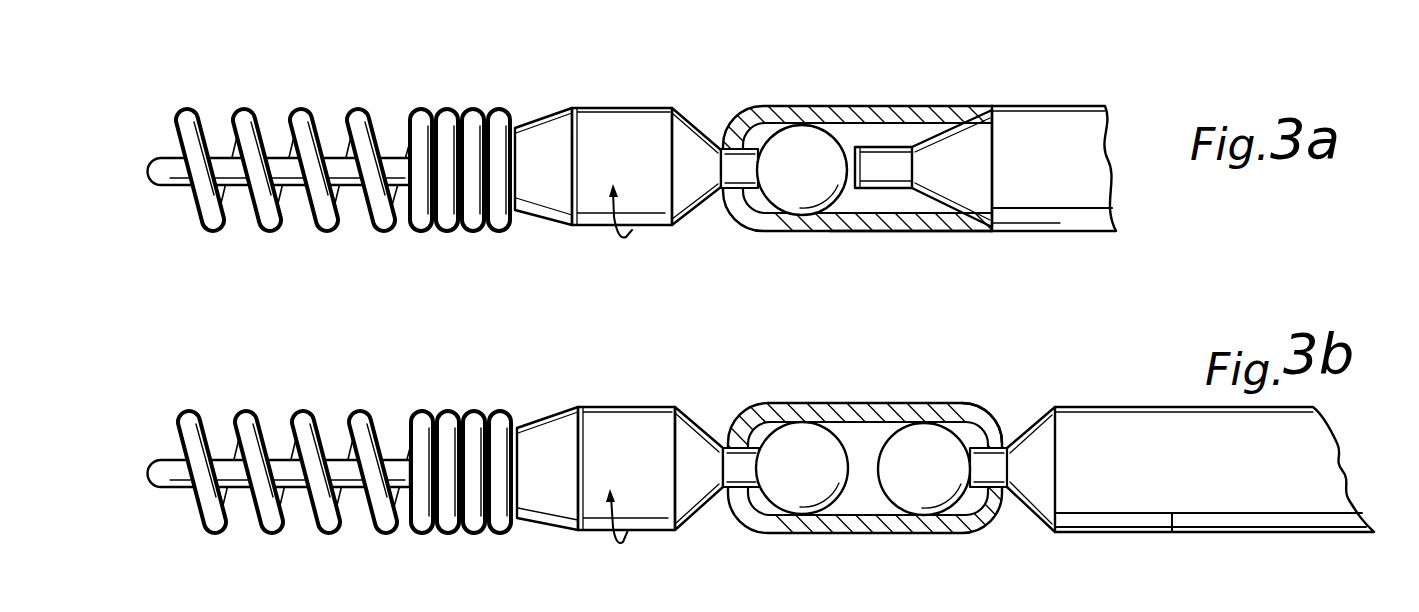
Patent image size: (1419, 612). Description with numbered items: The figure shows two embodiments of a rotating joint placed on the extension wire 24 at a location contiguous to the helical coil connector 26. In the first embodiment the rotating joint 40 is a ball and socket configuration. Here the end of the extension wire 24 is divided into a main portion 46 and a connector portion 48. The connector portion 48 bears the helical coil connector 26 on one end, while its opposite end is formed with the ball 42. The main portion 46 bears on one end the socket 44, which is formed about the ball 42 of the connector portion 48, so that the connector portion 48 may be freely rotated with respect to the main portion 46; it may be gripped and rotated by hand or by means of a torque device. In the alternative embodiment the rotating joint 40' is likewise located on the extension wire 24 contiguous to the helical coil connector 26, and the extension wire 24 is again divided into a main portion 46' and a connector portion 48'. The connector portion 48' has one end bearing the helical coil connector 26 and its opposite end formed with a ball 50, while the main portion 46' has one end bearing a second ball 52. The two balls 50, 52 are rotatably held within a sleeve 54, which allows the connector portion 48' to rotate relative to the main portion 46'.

In FIG. 3A, the extension wire 24 is at (1077, 100).
In FIG. 3B, the extension wire 24 is at (1256, 537).
In FIG. 3A, the helical coil connector 26 is at (420, 98).
In FIG. 3B, the helical coil connector 26 is at (447, 406).
In FIG. 3A, the rotating joint 40 is at (880, 141).
In FIG. 3B, the rotating joint 40' is at (870, 433).
In FIG. 3A, the ball 42 is at (808, 177).
In FIG. 3A, the socket 44 is at (853, 230).
In FIG. 3A, the main portion 46 is at (983, 202).
In FIG. 3B, the main portion 46' is at (1186, 499).
In FIG. 3A, the connector portion 48 is at (618, 204).
In FIG. 3B, the connector portion 48' is at (620, 497).
In FIG. 3B, the ball 50 is at (790, 483).
In FIG. 3B, the second ball 52 is at (917, 500).
In FIG. 3B, the sleeve 54 is at (965, 402).